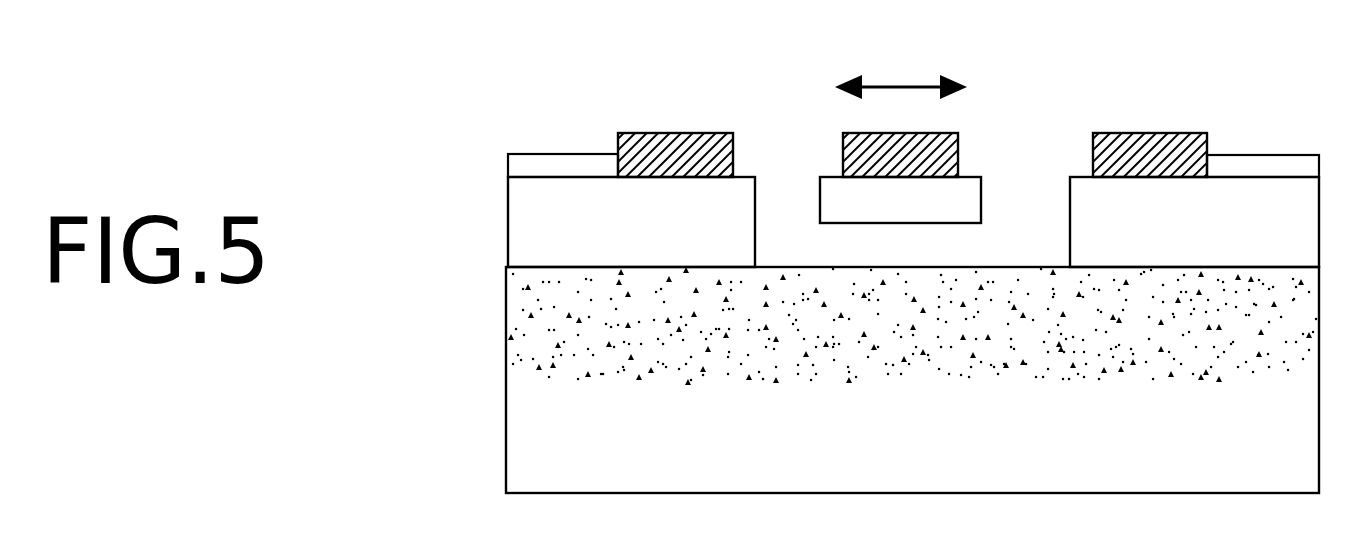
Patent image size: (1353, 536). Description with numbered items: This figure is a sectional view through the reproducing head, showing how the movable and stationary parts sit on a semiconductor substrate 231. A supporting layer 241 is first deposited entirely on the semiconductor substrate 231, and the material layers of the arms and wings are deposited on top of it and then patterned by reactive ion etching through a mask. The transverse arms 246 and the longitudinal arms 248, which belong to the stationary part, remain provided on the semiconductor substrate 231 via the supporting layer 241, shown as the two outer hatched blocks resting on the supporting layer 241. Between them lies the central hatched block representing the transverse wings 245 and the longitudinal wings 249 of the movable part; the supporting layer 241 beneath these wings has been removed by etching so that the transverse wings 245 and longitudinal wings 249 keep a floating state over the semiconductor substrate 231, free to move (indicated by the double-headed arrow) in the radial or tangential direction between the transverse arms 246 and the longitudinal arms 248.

The semiconductor substrate 231 is at (506, 379).
The supporting layer 241 is at (508, 222).
The transverse wings 245 is at (980, 98).
The longitudinal wings 249 is at (957, 160).
The transverse arms 246 is at (914, 109).
The longitudinal arms 248 is at (667, 132).